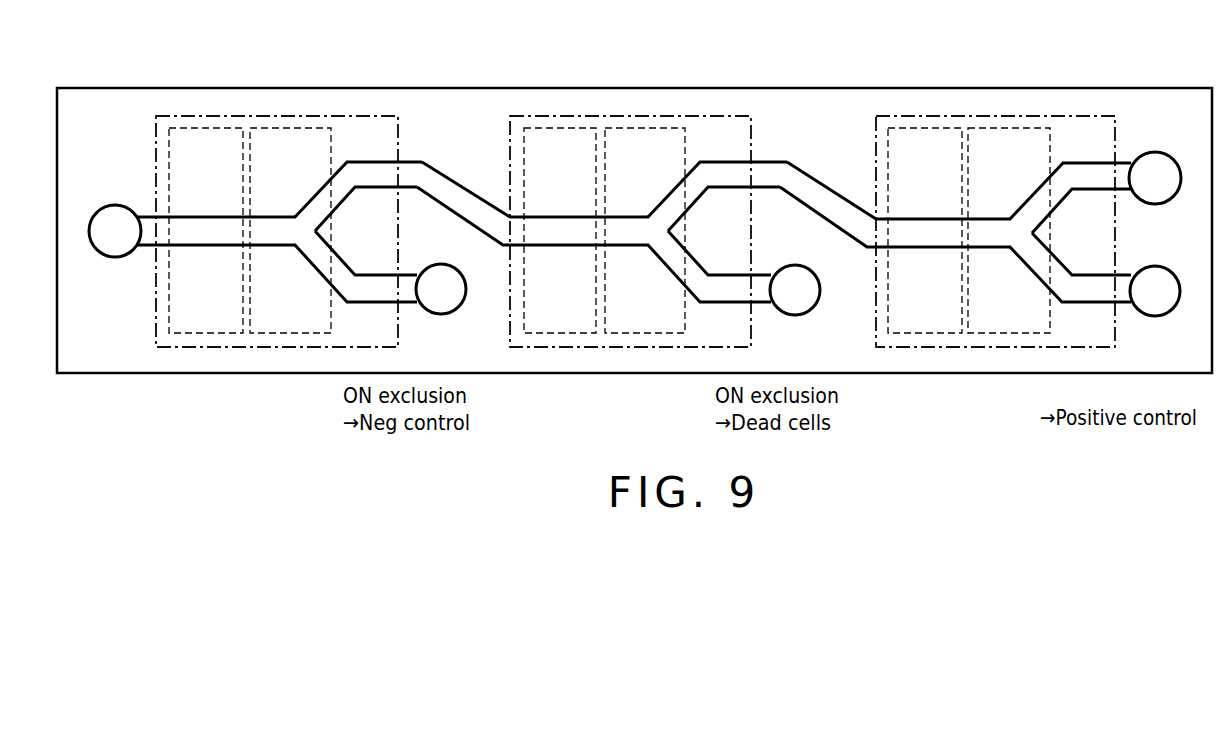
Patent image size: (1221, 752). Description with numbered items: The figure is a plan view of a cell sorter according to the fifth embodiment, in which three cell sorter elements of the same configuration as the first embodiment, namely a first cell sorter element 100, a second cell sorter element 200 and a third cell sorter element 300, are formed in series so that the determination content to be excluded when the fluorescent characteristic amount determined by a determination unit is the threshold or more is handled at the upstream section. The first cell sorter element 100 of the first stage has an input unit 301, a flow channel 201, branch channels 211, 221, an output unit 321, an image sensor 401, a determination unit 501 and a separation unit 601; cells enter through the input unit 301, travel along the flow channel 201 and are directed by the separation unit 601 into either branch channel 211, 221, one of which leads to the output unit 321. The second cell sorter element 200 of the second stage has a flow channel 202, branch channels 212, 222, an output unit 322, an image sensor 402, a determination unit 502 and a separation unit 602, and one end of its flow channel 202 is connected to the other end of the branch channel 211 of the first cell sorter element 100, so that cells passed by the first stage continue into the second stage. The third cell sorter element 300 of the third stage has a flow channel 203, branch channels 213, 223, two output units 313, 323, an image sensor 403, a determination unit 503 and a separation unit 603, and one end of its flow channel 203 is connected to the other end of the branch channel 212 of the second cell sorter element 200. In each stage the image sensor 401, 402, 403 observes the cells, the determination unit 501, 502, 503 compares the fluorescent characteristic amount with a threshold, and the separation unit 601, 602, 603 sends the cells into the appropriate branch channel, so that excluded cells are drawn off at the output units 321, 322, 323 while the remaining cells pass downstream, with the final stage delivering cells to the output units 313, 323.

The first cell sorter element 100 is at (157, 76).
The second cell sorter element 200 is at (512, 76).
The third cell sorter element 300 is at (1115, 76).
The flow channel 201 is at (203, 216).
The flow channel 202 is at (564, 216).
The flow channel 203 is at (909, 218).
The branch channel 211 is at (387, 160).
The branch channel 212 is at (741, 160).
The branch channel 213 is at (1105, 162).
The branch channel 221 is at (372, 274).
The branch channel 222 is at (726, 274).
The branch channel 223 is at (1086, 274).
The input unit 301 is at (113, 204).
The output unit 313 is at (1168, 151).
The output unit 321 is at (427, 263).
The output unit 322 is at (781, 264).
The output unit 323 is at (1144, 266).
The image sensor 401 is at (165, 348).
The image sensor 402 is at (520, 348).
The image sensor 403 is at (881, 348).
The determination unit 501 is at (220, 334).
The determination unit 502 is at (575, 334).
The determination unit 503 is at (932, 334).
The separation unit 601 is at (277, 334).
The separation unit 602 is at (630, 334).
The separation unit 603 is at (988, 334).